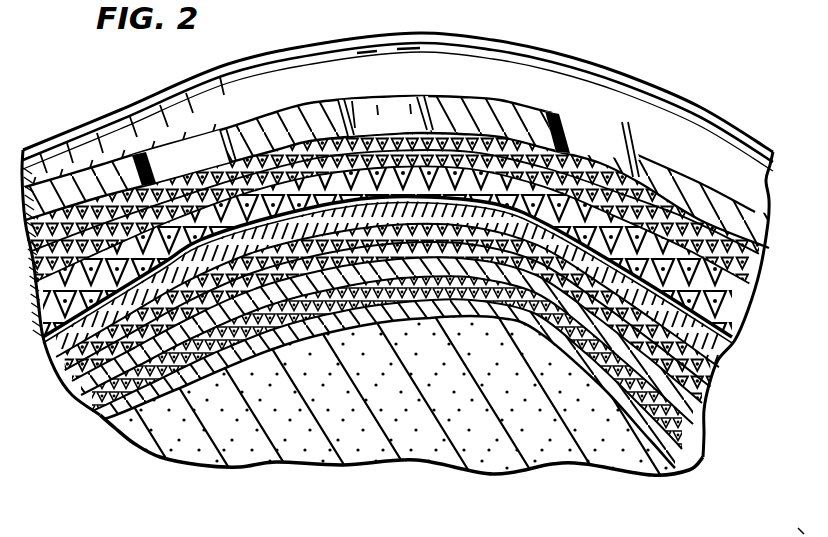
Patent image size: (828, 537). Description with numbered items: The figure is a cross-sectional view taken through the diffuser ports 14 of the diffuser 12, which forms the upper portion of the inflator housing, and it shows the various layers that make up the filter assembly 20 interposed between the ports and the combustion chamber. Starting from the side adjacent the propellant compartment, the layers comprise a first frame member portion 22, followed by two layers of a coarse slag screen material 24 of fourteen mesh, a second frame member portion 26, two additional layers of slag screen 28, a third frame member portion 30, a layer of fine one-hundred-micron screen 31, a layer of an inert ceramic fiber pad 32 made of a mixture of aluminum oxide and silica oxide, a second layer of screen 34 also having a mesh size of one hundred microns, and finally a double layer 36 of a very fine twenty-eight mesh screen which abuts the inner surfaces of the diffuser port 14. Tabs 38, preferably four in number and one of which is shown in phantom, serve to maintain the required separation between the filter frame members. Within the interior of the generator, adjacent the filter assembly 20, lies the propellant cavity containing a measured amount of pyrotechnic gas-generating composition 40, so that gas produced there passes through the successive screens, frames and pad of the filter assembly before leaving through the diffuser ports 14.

The diffuser 12 is at (648, 137).
The diffuser ports 14 is at (352, 100).
The filter assembly 20 is at (86, 436).
The first frame member portion 22 is at (685, 468).
The coarse slag screen material 24 is at (699, 442).
The second frame member portion 26 is at (98, 412).
The slag screen 28 is at (100, 375).
The third frame member portion 30 is at (60, 370).
The fine screen 31 is at (60, 345).
The inert ceramic fiber pad 32 is at (733, 348).
The second layer of screen 34 is at (738, 330).
The double layer of very fine mesh screen 36 is at (746, 290).
The tabs 38 is at (329, 325).
The pyrotechnic gas-generating composition 40 is at (436, 401).